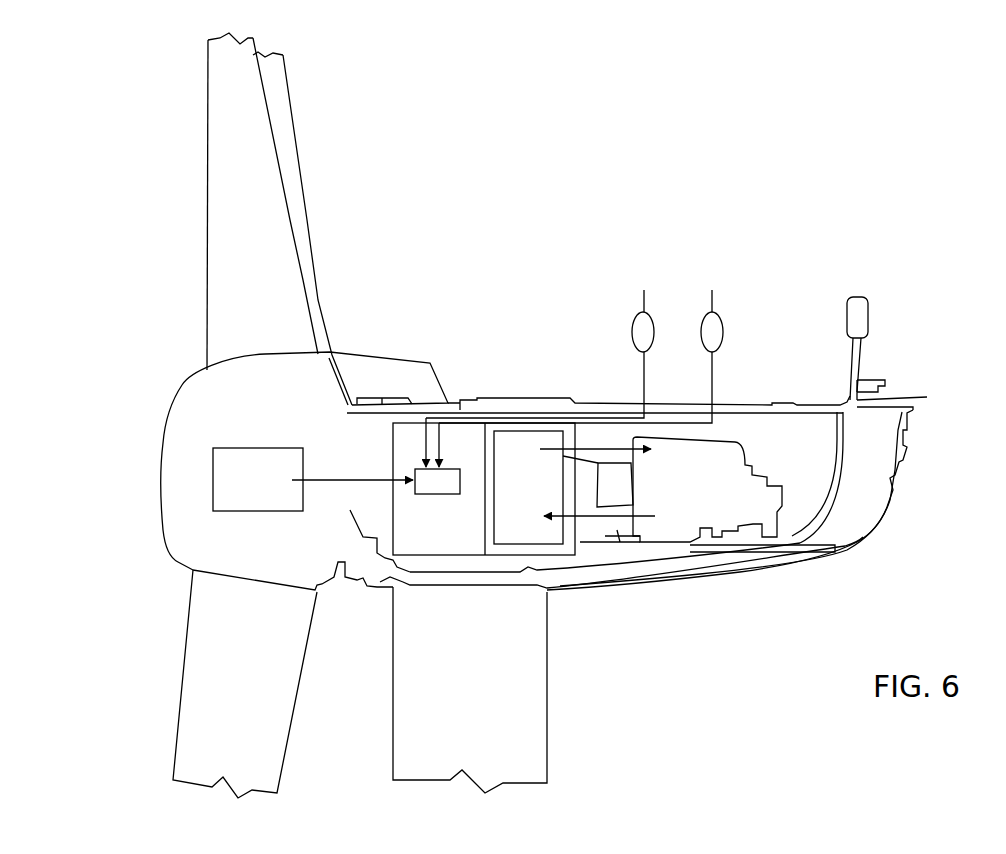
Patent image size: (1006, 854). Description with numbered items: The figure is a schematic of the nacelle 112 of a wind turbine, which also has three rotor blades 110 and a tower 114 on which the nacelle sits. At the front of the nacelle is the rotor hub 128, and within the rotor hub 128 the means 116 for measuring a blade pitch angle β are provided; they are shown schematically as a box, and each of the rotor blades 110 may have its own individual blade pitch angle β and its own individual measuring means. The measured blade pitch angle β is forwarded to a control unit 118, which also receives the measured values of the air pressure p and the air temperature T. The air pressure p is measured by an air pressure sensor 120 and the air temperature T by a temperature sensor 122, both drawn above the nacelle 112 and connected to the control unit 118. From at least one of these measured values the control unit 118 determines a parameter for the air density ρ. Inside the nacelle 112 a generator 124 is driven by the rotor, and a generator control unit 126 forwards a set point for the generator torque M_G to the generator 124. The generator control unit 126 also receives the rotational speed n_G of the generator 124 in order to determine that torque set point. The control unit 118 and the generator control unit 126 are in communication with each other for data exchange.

The rotor blade 110 is at (268, 247).
The nacelle 112 is at (847, 490).
The tower 114 is at (530, 703).
The means for measuring a blade pitch angle 116 is at (225, 497).
The control unit 118 is at (443, 478).
The air pressure sensor 120 is at (643, 290).
The temperature sensor 122 is at (714, 298).
The generator 124 is at (687, 512).
The generator control unit 126 is at (498, 480).
The rotor hub 128 is at (225, 405).